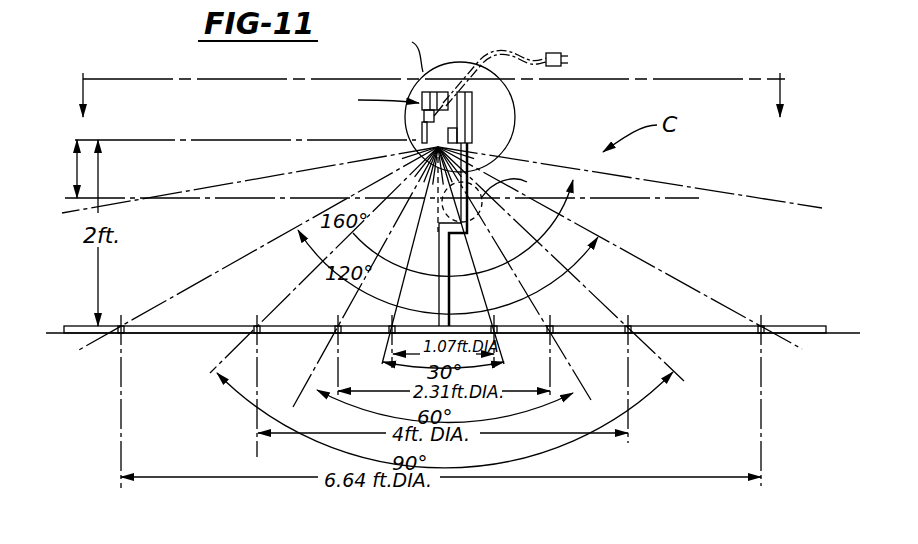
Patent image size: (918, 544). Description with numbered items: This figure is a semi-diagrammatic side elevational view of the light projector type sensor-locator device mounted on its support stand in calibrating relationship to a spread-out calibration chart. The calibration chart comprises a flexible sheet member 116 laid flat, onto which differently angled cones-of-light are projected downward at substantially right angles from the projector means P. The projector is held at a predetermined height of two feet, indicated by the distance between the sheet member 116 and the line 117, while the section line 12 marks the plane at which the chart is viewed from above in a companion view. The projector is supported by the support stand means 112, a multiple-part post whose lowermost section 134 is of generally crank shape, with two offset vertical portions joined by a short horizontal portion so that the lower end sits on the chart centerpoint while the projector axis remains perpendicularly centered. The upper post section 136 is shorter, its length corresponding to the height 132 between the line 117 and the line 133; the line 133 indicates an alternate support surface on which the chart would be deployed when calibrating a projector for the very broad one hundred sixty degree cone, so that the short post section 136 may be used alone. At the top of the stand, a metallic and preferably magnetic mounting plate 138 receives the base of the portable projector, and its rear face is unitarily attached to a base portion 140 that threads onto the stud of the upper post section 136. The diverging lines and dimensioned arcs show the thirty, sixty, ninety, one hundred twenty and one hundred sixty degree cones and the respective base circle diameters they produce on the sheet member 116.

The section line 12 is at (436, 73).
The projector support stand means 112 is at (620, 248).
The sheet member 116 is at (785, 322).
The line 117 is at (227, 140).
The height 132 is at (72, 169).
The line 133 is at (219, 184).
The lowermost section 134 is at (620, 248).
The upper post section 136 is at (473, 188).
The mounting plate 138 is at (501, 101).
The base portion 140 is at (478, 110).